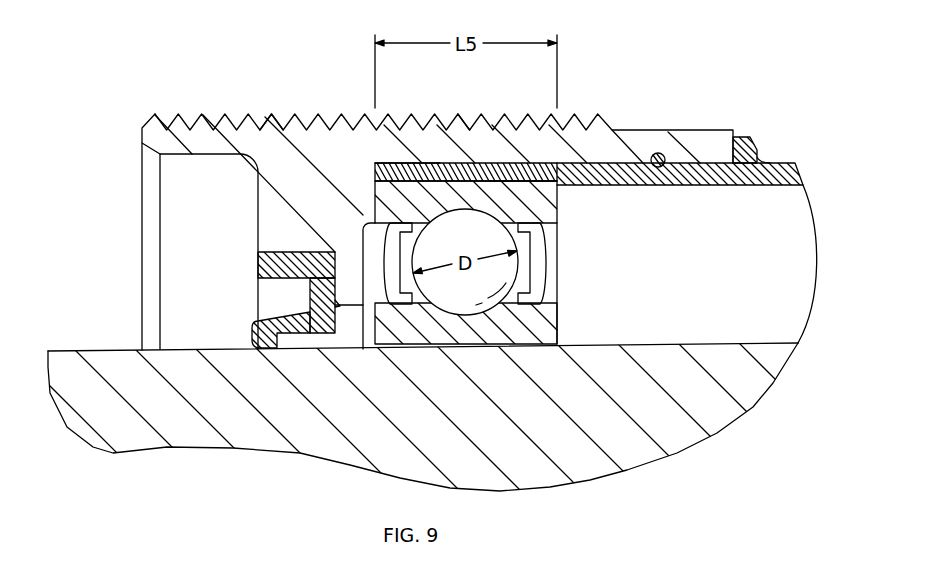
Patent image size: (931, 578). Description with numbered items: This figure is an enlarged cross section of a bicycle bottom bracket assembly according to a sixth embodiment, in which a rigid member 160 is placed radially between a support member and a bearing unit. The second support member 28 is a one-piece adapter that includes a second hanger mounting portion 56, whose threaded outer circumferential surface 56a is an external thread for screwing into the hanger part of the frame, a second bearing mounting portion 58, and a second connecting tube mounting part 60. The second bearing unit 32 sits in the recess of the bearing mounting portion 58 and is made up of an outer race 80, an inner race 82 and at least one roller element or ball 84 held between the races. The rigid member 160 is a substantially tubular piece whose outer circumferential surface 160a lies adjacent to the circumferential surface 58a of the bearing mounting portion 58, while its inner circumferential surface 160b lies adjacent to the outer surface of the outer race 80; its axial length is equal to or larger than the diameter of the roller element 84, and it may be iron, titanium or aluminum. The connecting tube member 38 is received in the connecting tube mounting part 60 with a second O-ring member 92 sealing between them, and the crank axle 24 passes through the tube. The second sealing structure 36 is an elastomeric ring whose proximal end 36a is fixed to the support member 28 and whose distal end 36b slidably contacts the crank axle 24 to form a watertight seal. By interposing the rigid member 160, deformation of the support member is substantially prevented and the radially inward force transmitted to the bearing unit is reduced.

The crank axle 24 is at (43, 361).
The second support member 28 is at (136, 180).
The second bearing unit 32 is at (563, 313).
The second sealing structure 36 is at (310, 297).
The proximal end 36a is at (297, 251).
The distal end 36b is at (252, 328).
The connecting tube member 38 is at (781, 157).
The second hanger mounting portion 56 is at (240, 112).
The threaded outer circumferential surface 56a is at (272, 117).
The second bearing mounting portion 58 is at (551, 158).
The circumferential surface 58a is at (462, 162).
The second connecting tube mounting part 60 is at (708, 124).
The outer race 80 is at (560, 212).
The inner race 82 is at (490, 328).
The roller element or ball 84 is at (455, 293).
The second O-ring member 92 is at (660, 153).
The rigid member 160 is at (505, 162).
The outer circumferential surface 160a is at (407, 162).
The inner circumferential surface 160b is at (495, 191).